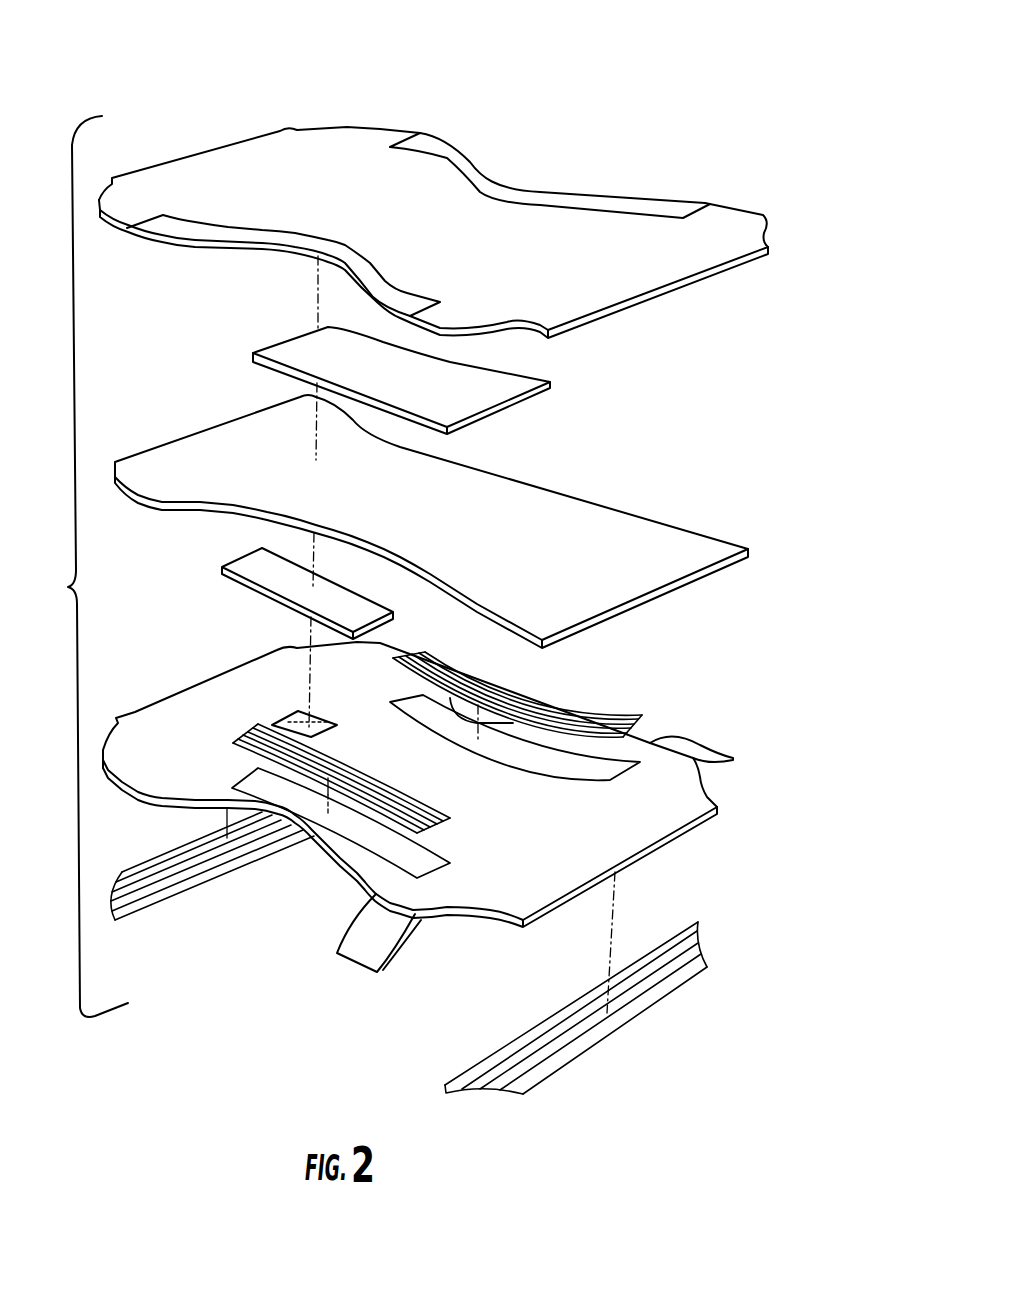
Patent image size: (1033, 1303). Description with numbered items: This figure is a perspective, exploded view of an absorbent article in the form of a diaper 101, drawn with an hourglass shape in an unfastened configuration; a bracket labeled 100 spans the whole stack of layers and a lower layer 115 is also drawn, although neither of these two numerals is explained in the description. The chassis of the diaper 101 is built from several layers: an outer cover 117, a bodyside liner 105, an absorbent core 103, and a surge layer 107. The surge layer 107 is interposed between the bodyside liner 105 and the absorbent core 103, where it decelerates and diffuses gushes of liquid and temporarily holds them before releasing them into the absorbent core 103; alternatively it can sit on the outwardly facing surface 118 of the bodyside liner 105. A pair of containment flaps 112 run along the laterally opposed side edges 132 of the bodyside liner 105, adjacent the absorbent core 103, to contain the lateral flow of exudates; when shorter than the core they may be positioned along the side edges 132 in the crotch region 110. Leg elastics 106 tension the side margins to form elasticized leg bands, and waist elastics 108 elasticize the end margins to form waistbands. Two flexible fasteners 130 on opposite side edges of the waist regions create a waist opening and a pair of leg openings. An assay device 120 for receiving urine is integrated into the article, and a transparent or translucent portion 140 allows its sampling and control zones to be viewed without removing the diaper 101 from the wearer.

The exploded layered assembly 100 is at (73, 587).
The diaper 101 is at (579, 86).
The absorbent core 103 is at (217, 427).
The bodyside liner 105 is at (727, 203).
The leg elastics 106 is at (543, 712).
The surge layer 107 is at (532, 400).
The waist elastics 108 is at (157, 897).
The crotch region 110 is at (267, 150).
The containment flaps 112 is at (533, 193).
The base layer 115 is at (657, 847).
The outer cover 117 is at (710, 793).
The outwardly facing surface 118 is at (355, 131).
The assay device 120 is at (222, 567).
The fasteners 130 is at (683, 747).
The side edges 132 is at (470, 165).
The transparent or translucent portion 140 is at (293, 717).